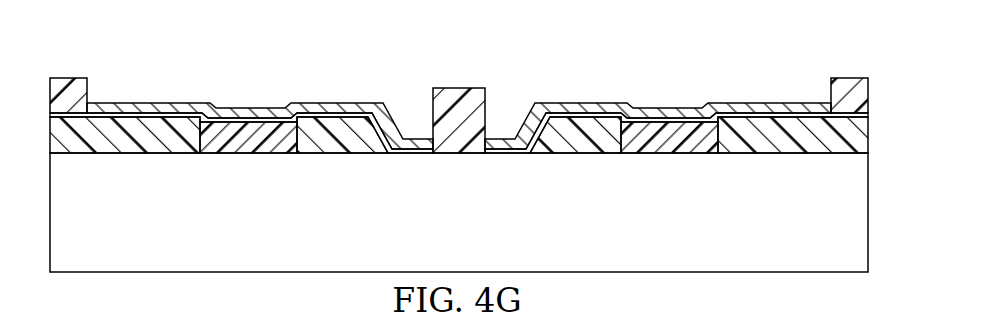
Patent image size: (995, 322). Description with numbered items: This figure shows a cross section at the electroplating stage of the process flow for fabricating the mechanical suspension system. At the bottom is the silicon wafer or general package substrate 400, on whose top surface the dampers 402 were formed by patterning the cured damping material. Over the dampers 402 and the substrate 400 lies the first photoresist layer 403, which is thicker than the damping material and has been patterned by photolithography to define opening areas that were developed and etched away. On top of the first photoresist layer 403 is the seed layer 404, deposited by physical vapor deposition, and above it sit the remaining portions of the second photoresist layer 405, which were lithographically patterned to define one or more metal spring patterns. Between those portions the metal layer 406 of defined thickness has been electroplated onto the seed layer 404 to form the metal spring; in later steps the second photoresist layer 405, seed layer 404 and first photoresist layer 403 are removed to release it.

The silicon wafer or general package substrate 400 is at (442, 227).
The dampers 402 is at (242, 150).
The first photoresist layer 403 is at (106, 150).
The seed layer 404 is at (645, 116).
The second photoresist layer 405 is at (845, 78).
The metal layer 406 is at (763, 103).